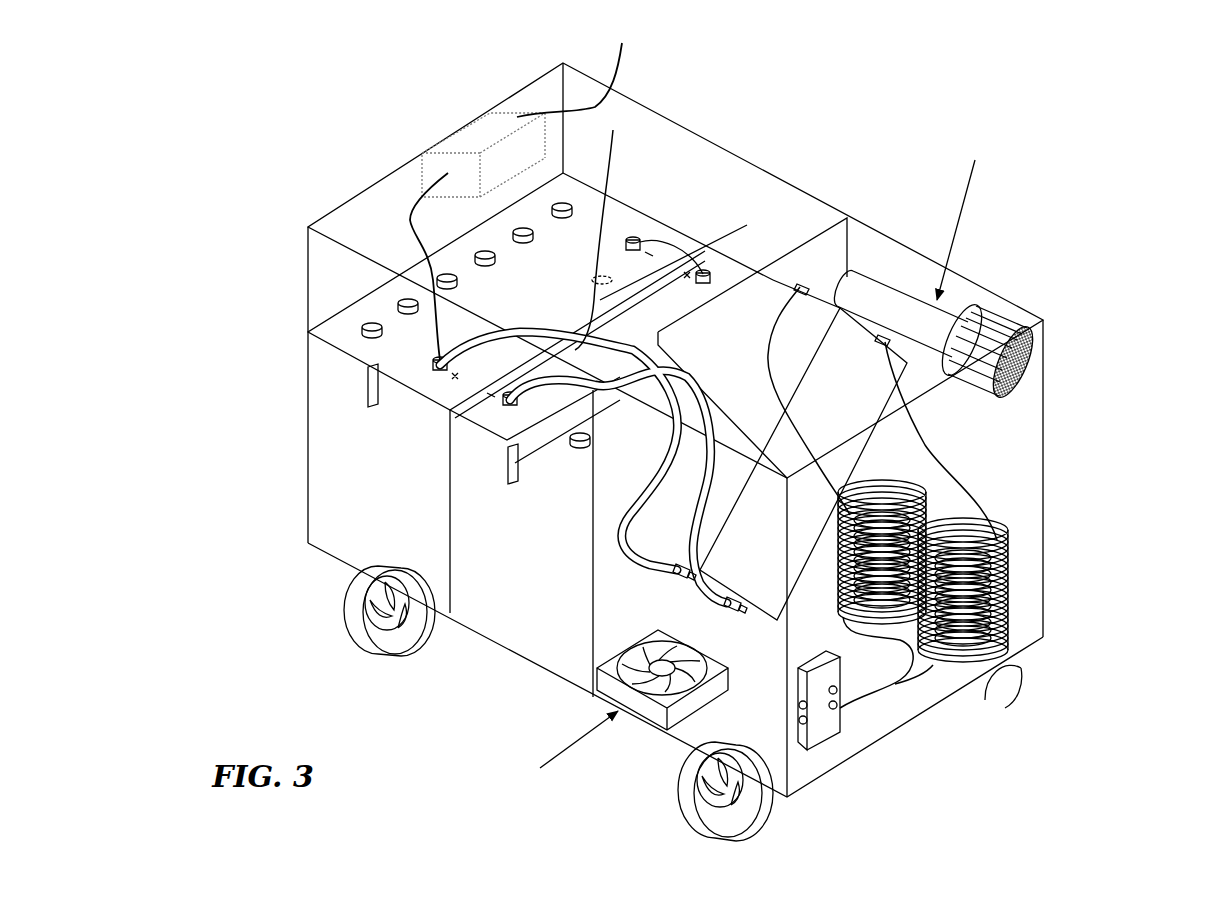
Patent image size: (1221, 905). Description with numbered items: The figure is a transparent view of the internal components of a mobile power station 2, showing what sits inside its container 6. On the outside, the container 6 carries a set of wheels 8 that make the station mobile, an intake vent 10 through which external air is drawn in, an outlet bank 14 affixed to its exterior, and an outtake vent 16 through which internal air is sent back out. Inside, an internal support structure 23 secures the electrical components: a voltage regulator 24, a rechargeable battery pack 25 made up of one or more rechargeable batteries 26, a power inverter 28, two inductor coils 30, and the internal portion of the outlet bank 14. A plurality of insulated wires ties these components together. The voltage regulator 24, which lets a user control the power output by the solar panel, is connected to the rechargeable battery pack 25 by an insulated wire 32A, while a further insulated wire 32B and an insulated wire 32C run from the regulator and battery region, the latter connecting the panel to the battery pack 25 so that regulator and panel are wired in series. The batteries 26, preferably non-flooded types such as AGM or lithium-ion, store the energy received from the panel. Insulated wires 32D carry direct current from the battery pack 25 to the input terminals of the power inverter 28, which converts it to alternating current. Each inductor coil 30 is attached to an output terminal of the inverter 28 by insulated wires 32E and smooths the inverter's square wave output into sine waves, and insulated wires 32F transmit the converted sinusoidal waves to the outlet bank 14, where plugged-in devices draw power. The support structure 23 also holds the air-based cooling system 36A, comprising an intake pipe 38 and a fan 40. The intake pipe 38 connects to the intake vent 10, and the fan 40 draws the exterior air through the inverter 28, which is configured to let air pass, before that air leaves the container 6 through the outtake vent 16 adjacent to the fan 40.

The mobile power station 2 is at (914, 134).
The container 6 is at (306, 522).
The set of wheels 8 is at (388, 658).
The intake vent 10 is at (1012, 398).
The outlet bank 14 is at (824, 745).
The outtake vent 16 is at (660, 742).
The internal support structure 23 is at (701, 343).
The voltage regulator 24 is at (500, 167).
The rechargeable battery pack 25 is at (432, 515).
The rechargeable batteries 26 is at (414, 578).
The power inverter 28 is at (834, 393).
The inductor coils 30 is at (927, 513).
The insulated wire 32A is at (403, 210).
The cable 32B is at (595, 78).
The insulated wire 32C is at (613, 130).
The insulated wires 32D is at (640, 548).
The insulated wires 32E is at (817, 470).
The insulated wires 32F is at (880, 690).
The air-based cooling system 36A is at (745, 458).
The intake pipe 38 is at (965, 330).
The fan 40 is at (628, 706).